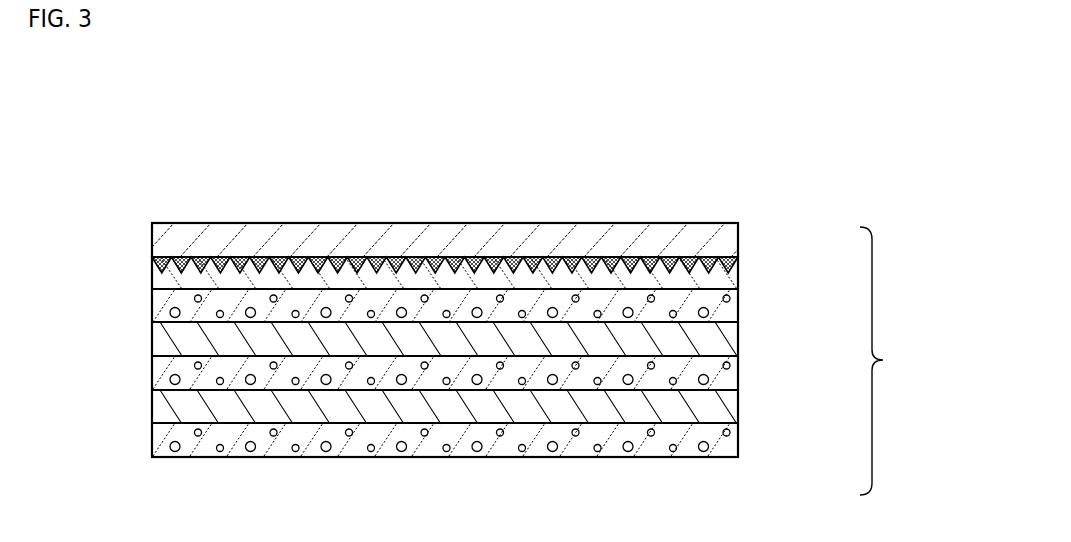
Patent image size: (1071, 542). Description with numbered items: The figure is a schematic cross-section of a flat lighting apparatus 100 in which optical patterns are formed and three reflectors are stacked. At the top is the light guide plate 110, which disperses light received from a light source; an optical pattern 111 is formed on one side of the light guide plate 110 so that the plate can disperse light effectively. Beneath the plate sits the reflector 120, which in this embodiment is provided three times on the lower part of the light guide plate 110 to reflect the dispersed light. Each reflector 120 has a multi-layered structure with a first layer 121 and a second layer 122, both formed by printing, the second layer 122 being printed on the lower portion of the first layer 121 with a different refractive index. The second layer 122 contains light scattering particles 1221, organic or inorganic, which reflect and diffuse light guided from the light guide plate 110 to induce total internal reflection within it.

The flat lighting apparatus 100 is at (220, 154).
The light guide plate 110 is at (550, 233).
The optical pattern 111 is at (667, 252).
The reflector 120 is at (549, 361).
The first layer 121 is at (720, 280).
The second layer 122 is at (723, 312).
The light scattering particles 1221 is at (172, 310).